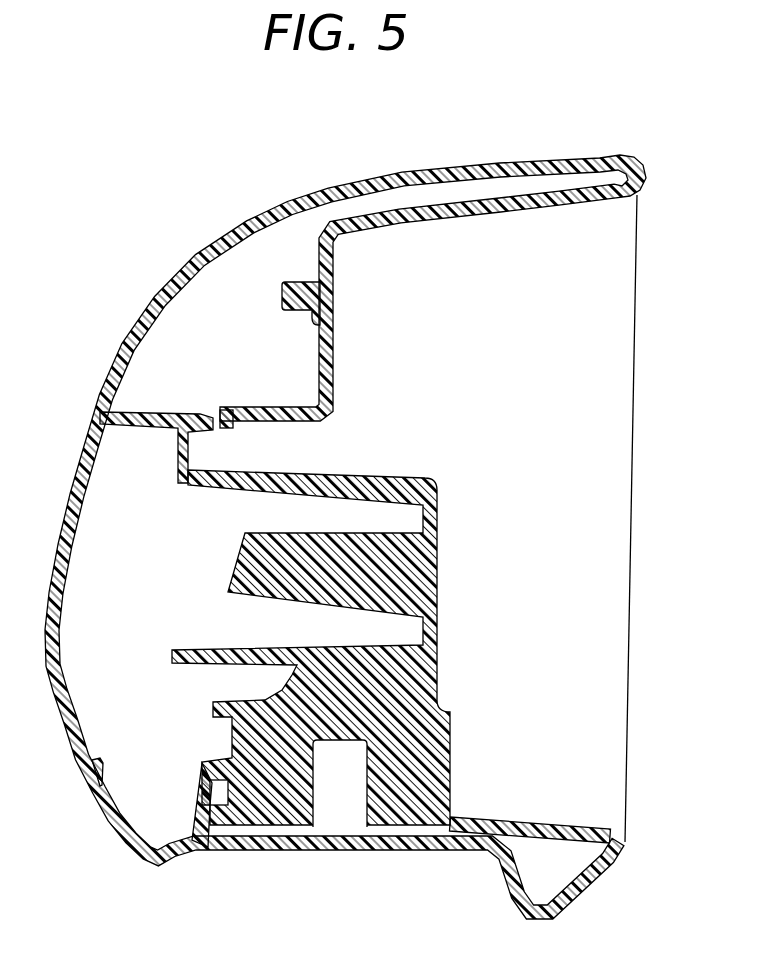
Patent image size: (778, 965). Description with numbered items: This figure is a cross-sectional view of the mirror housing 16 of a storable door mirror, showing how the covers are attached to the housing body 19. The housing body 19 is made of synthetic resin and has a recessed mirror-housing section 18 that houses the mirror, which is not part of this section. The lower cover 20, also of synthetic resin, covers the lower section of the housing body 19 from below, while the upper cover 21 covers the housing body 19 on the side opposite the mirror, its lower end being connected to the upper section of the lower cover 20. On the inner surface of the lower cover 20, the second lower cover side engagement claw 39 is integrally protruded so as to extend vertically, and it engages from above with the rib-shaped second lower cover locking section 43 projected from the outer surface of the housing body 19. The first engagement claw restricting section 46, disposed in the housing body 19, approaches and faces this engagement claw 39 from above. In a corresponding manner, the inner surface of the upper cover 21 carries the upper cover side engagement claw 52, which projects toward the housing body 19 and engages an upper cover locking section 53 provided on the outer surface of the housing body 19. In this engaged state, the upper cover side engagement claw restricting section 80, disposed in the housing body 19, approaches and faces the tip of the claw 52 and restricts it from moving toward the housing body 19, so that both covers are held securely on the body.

The mirror housing 16 is at (222, 229).
The upper cover 21 is at (287, 197).
The mirror-housing section 18 is at (565, 214).
The fifth upper cover side engagement claw 52 is at (163, 411).
The first upper cover locking section 53 is at (178, 443).
The upper cover side engagement claw restricting section 80 is at (229, 409).
The housing body 19 is at (400, 477).
The first engagement claw restricting section 46 is at (205, 770).
The second lower cover side engagement claw 39 is at (203, 793).
The second lower cover locking section 43 is at (212, 842).
The lower cover 20 is at (270, 851).